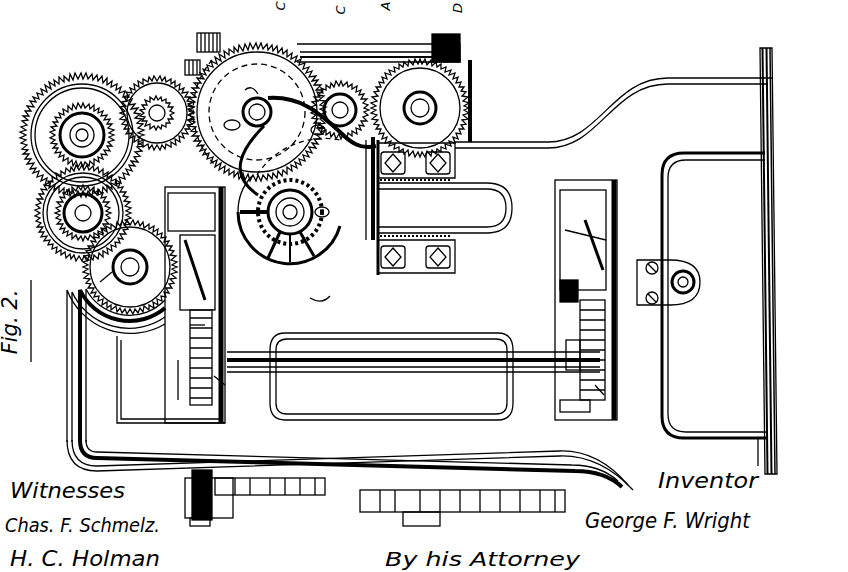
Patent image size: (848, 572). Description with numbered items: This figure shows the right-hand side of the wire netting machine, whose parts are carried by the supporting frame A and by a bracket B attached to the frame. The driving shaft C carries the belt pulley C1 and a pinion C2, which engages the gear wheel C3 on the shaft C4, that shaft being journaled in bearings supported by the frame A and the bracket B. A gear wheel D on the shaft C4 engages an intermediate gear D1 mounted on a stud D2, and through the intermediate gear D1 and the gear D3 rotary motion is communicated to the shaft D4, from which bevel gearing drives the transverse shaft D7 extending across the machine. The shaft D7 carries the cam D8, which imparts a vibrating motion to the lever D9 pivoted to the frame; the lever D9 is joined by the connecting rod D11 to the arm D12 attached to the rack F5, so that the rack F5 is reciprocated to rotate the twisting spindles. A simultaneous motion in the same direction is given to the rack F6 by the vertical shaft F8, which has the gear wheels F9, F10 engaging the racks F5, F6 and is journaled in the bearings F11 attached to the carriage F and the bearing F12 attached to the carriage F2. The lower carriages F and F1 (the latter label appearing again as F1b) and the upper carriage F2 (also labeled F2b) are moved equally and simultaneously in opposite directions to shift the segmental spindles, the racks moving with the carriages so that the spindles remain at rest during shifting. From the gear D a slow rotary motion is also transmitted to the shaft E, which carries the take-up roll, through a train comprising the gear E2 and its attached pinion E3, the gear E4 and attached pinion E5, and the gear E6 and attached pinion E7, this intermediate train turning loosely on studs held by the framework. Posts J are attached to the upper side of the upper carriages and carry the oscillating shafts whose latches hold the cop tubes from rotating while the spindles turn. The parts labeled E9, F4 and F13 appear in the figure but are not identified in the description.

The supporting frame A is at (541, 158).
The bracket B is at (284, 138).
The driving shaft C is at (290, 226).
The belt pulley C1 is at (333, 69).
The pinion C2 is at (304, 236).
The gear wheel C3 is at (224, 122).
The shaft C4 is at (241, 81).
The gear wheel D is at (262, 62).
The intermediate gear D1 is at (332, 88).
The stud D2 is at (342, 90).
The gear D3 is at (420, 100).
The shaft D4 is at (422, 118).
The transverse shaft D7 is at (456, 228).
The cam D8 is at (362, 514).
The lever D9 is at (288, 496).
The connecting rod D11 is at (198, 502).
The arm D12 is at (200, 520).
The shaft E is at (130, 274).
The gear E2 is at (167, 70).
The pinion E3 is at (155, 105).
The gear E4 is at (98, 95).
The pinion E5 is at (76, 112).
The gear E6 is at (38, 224).
The pinion E7 is at (66, 248).
The shaft E9 is at (100, 282).
The carriage F is at (191, 305).
The carriage F1 is at (196, 240).
The carriage F1b is at (190, 392).
The carriage F2 is at (565, 282).
The carriage F2b is at (605, 362).
The lever F4 is at (598, 235).
The rack F5 is at (205, 325).
The rack F6 is at (600, 330).
The vertical shaft F8 is at (342, 372).
The gear wheel F9 is at (214, 380).
The gear wheel F10 is at (604, 395).
The bearings F11 is at (178, 372).
The bearing F12 is at (578, 365).
The lever F13 is at (606, 240).
The posts J is at (694, 288).